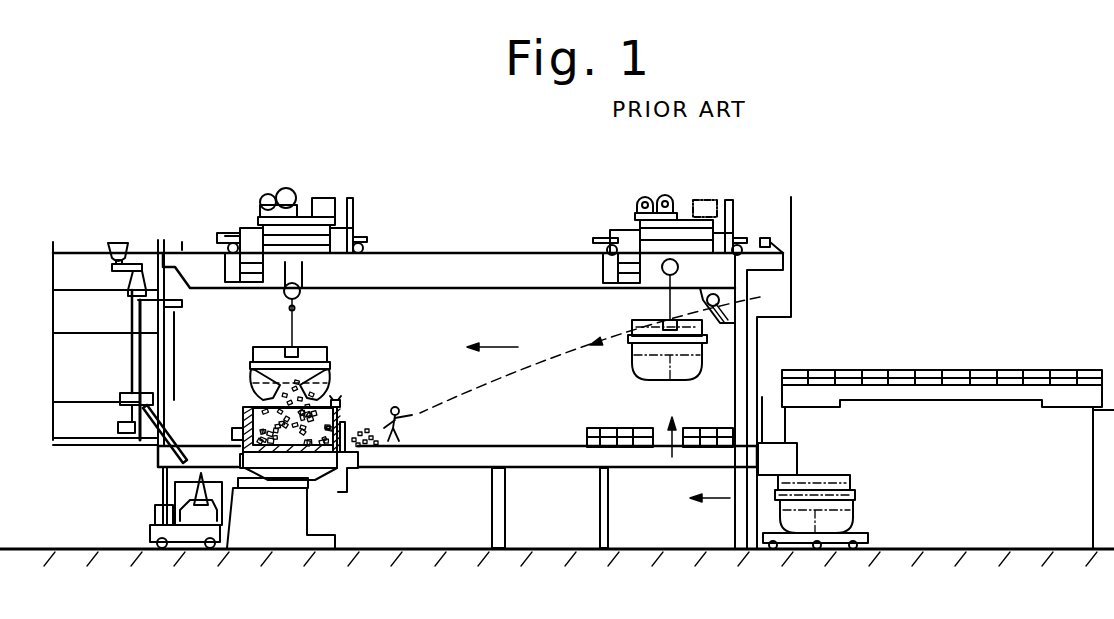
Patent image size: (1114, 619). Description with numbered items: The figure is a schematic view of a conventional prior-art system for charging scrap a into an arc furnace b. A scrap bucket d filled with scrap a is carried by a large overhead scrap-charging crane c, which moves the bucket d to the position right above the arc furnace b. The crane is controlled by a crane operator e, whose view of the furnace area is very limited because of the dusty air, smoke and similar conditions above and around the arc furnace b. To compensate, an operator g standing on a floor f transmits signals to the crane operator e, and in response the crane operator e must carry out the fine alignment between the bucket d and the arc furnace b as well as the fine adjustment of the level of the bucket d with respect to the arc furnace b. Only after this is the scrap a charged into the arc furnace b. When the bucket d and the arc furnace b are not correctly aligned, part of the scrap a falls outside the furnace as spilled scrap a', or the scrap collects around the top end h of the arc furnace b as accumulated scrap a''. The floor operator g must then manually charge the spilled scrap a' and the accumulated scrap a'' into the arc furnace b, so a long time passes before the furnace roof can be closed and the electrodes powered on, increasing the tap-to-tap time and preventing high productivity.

The scrap a is at (277, 392).
The spilled scrap a' is at (384, 409).
The accumulated scrap a'' is at (354, 366).
The arc furnace b is at (353, 413).
The overhead scrap-charging crane c is at (464, 253).
The scrap bucket d is at (311, 347).
The crane operator e is at (745, 302).
The floor f is at (540, 447).
The floor operator g is at (403, 420).
The top end of the arc furnace h is at (250, 406).